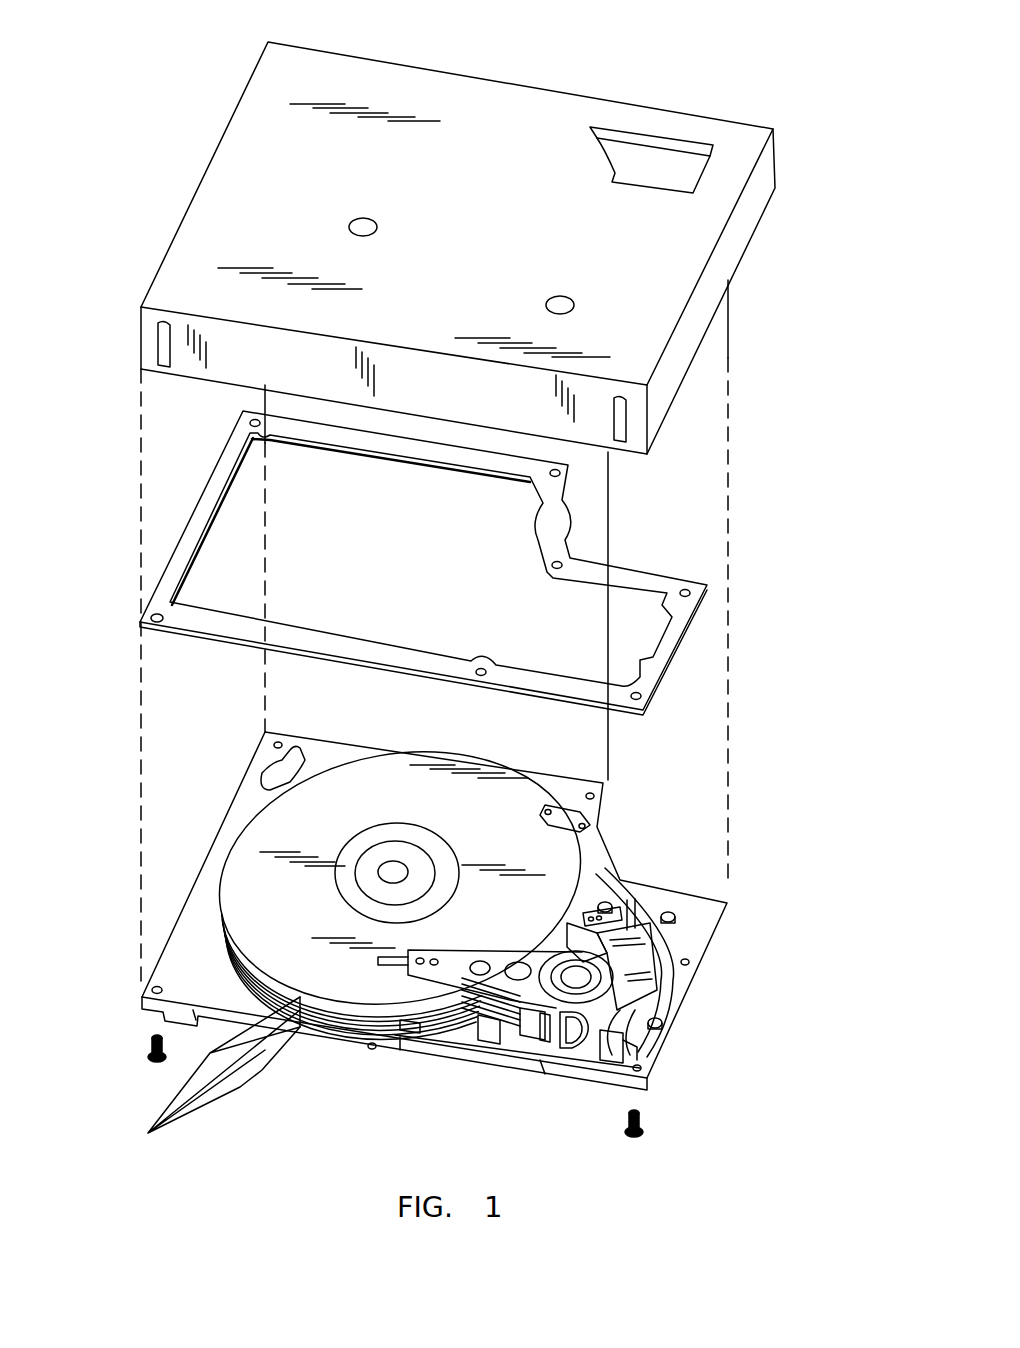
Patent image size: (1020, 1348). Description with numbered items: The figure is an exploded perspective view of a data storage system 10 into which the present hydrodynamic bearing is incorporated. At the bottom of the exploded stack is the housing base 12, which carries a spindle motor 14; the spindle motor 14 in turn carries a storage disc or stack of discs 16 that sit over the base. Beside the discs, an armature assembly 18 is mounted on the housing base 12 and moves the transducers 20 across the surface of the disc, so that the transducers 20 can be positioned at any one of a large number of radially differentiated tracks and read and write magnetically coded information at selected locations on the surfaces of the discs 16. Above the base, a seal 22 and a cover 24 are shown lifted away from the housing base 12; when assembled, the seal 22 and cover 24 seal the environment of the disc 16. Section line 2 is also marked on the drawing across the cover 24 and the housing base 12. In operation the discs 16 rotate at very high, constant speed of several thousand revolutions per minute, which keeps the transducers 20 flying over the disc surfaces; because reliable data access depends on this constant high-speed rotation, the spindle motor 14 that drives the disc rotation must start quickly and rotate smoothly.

The section line 2- 2 is at (432, 210).
The data storage system 10 is at (792, 217).
The housing base 12 is at (662, 1049).
The spindle motor 14 is at (348, 870).
The storage disc 16 is at (201, 1087).
The armature assembly 18 is at (477, 1034).
The transducers 20 is at (383, 980).
The seal 22 is at (672, 650).
The cover 24 is at (710, 322).